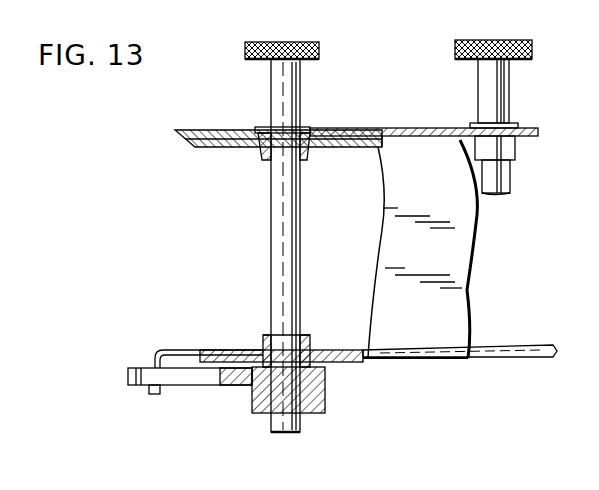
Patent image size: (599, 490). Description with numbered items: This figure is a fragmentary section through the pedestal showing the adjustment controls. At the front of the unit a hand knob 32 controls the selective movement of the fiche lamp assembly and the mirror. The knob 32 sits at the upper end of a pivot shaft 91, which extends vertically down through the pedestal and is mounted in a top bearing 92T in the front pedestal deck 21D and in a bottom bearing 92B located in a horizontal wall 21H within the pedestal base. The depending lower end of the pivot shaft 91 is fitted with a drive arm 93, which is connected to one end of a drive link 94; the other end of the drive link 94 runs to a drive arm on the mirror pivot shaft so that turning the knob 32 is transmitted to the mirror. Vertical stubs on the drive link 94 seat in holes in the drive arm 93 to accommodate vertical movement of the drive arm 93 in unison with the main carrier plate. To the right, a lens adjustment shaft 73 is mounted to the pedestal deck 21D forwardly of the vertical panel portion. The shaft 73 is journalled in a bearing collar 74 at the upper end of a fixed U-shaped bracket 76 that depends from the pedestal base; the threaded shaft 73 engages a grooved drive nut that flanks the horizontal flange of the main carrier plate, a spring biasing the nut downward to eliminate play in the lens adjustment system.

The hand knob 32 is at (304, 43).
The pivot shaft 91 is at (288, 216).
The pedestal deck 21D is at (330, 132).
The top bearing 92T is at (262, 158).
The lens adjustment shaft 73 is at (495, 101).
The bearing collar 74 is at (515, 140).
The U-shaped bracket 76 is at (452, 247).
The bottom bearing 92B is at (268, 336).
The horizontal wall 21H is at (340, 357).
The drive link 94 is at (170, 352).
The drive arm 93 is at (215, 385).